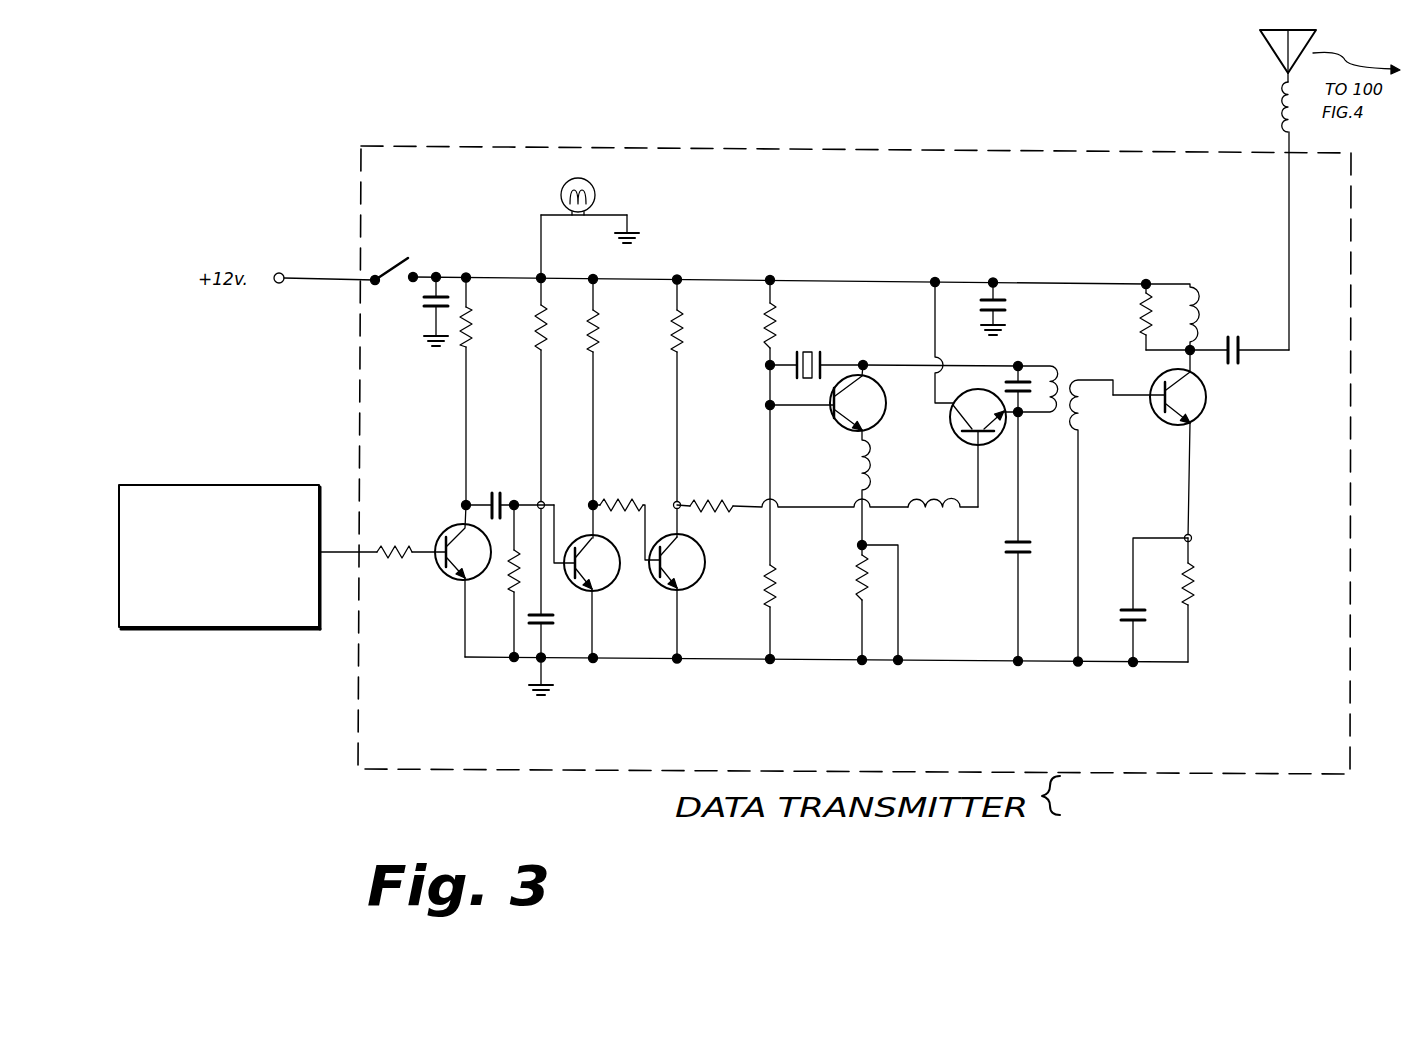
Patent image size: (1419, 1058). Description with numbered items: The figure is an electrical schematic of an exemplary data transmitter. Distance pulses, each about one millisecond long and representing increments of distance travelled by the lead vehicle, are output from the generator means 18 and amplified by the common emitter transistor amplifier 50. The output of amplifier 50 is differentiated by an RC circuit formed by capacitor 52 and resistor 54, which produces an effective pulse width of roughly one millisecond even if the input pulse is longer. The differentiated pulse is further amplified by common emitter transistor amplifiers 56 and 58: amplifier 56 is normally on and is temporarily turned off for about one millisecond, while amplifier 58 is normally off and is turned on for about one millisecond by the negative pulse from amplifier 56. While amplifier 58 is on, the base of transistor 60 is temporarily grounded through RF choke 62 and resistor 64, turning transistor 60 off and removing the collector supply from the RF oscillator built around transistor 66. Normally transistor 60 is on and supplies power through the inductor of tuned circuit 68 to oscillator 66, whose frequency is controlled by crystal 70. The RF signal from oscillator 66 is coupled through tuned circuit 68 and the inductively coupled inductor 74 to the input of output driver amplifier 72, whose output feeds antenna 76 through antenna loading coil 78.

The generator means 18 is at (237, 485).
The common emitter transistor amplifier 50 is at (440, 590).
The capacitor 52 is at (496, 492).
The resistor 54 is at (512, 580).
The common emitter transistor amplifier 56 is at (614, 586).
The common emitter transistor amplifier 58 is at (700, 583).
The transistor 60 is at (953, 440).
The RF choke 62 is at (933, 512).
The resistor 64 is at (713, 506).
The transistor oscillator 66 is at (908, 413).
The tuned circuit 68 is at (1040, 372).
The crystal 70 is at (822, 362).
The output driver amplifier 72 is at (1238, 407).
The inductively coupled inductor 74 is at (1090, 388).
The antenna 76 is at (1268, 45).
The antenna loading coil 78 is at (1275, 105).